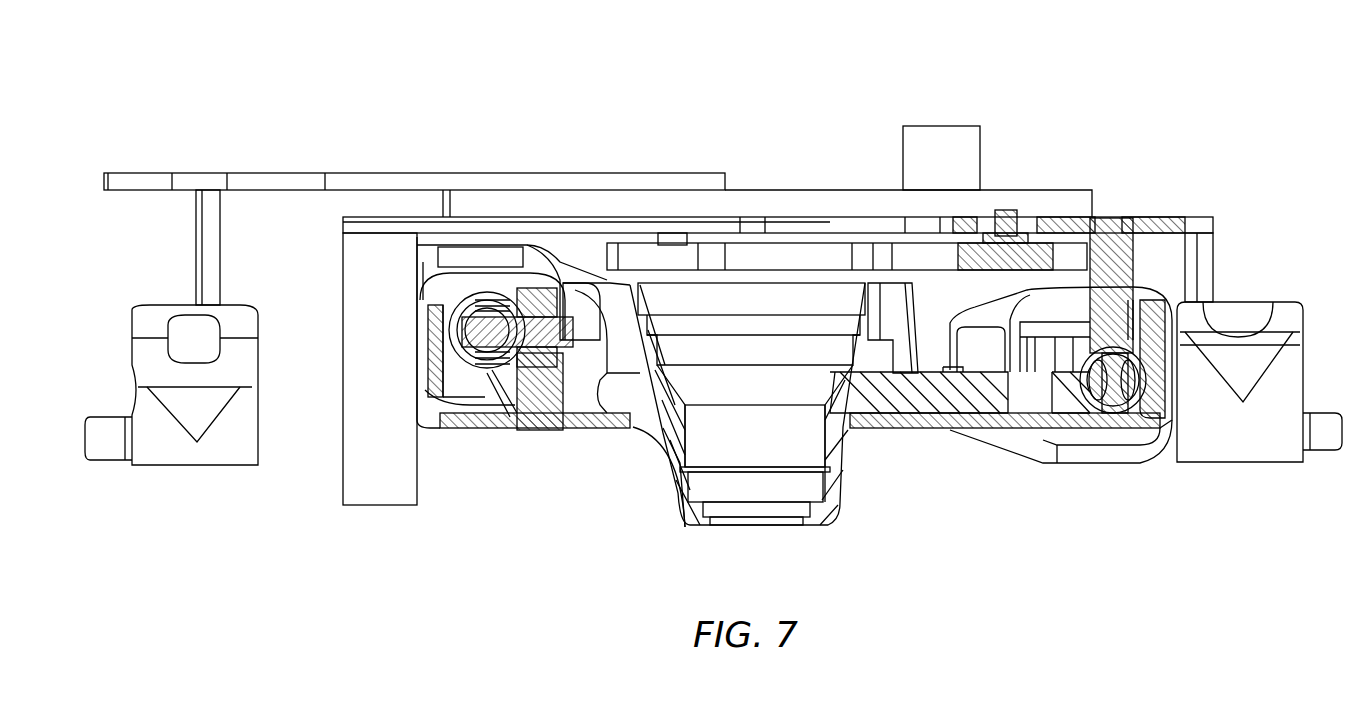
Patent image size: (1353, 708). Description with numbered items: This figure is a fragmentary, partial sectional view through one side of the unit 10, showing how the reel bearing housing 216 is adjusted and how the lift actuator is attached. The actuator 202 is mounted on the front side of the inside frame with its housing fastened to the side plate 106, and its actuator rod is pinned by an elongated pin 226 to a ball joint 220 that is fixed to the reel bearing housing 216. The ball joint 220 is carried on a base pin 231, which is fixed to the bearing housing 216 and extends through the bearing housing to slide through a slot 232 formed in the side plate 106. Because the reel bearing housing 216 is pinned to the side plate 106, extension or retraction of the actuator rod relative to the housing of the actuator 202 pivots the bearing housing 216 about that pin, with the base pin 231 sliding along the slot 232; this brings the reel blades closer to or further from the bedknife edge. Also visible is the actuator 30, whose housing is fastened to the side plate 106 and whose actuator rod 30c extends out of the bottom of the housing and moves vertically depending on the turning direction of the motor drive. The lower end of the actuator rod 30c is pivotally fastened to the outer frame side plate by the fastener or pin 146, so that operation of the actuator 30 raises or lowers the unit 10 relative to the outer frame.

The unit 10 is at (808, 100).
The actuator 202 is at (475, 255).
The reel bearing housing 216 is at (907, 317).
The fastener or pin 146 is at (1163, 288).
The actuator 30 is at (1163, 290).
The actuator rod 30c is at (1128, 430).
The elongated pin 226 is at (473, 335).
The ball joint 220 is at (512, 428).
The base pin 231 is at (548, 428).
The slot 232 is at (533, 428).
The side plate 106 is at (622, 428).